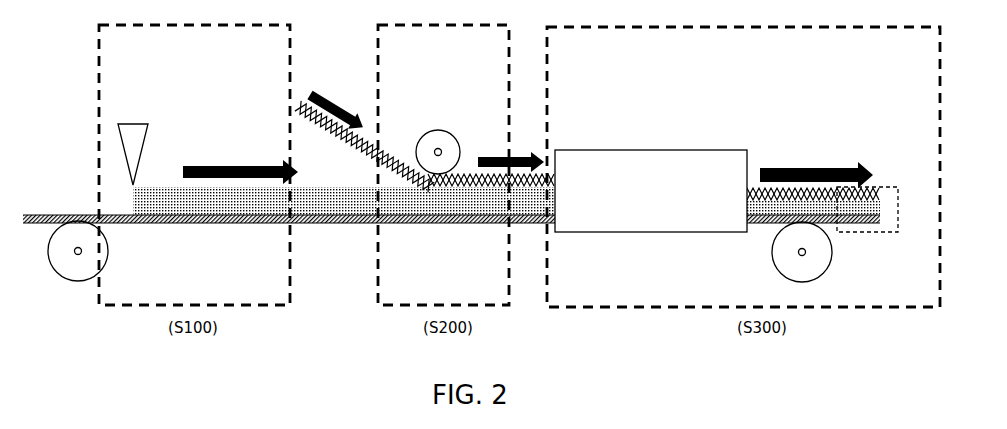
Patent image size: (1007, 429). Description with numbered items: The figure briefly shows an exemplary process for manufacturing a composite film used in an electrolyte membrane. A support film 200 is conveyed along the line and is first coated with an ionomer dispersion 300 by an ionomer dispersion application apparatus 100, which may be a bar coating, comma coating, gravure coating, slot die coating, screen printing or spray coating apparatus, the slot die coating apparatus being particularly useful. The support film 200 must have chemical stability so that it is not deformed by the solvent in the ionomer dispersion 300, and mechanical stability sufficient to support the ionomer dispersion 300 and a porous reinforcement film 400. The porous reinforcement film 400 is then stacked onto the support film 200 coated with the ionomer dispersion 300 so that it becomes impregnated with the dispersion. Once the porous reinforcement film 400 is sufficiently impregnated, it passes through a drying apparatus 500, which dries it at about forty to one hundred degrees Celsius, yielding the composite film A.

The ionomer dispersion application apparatus 100 is at (133, 118).
The support film 200 is at (328, 224).
The ionomer dispersion 300 is at (221, 208).
The porous reinforcement film 400 is at (383, 146).
The drying apparatus 500 is at (659, 147).
The composite film A is at (889, 184).